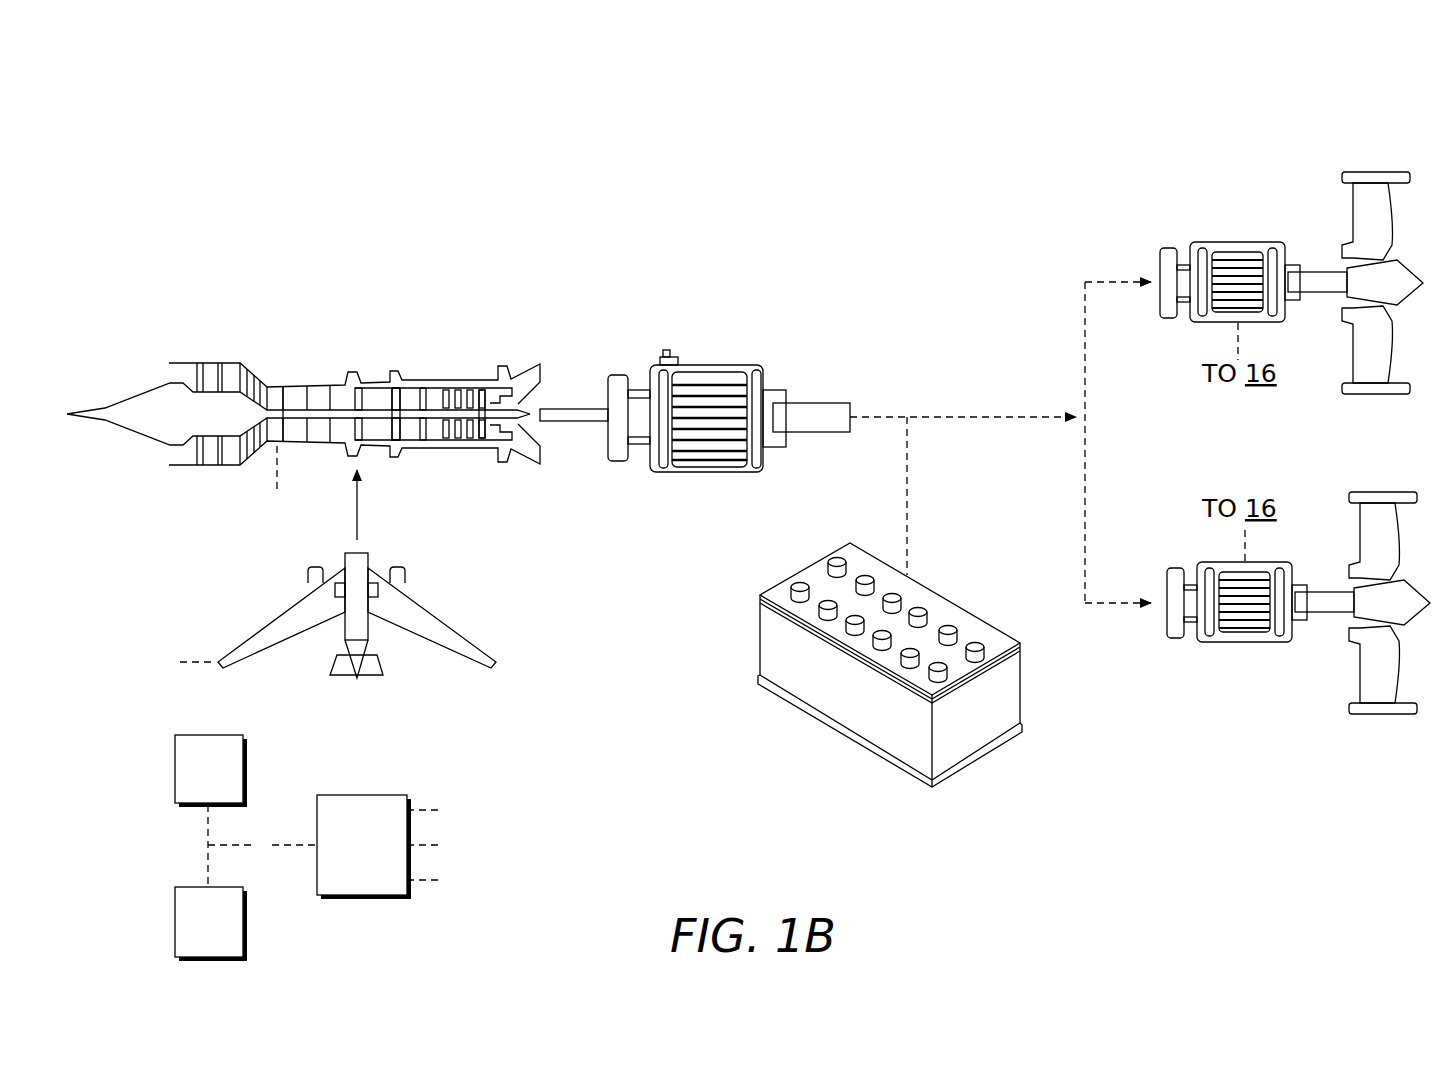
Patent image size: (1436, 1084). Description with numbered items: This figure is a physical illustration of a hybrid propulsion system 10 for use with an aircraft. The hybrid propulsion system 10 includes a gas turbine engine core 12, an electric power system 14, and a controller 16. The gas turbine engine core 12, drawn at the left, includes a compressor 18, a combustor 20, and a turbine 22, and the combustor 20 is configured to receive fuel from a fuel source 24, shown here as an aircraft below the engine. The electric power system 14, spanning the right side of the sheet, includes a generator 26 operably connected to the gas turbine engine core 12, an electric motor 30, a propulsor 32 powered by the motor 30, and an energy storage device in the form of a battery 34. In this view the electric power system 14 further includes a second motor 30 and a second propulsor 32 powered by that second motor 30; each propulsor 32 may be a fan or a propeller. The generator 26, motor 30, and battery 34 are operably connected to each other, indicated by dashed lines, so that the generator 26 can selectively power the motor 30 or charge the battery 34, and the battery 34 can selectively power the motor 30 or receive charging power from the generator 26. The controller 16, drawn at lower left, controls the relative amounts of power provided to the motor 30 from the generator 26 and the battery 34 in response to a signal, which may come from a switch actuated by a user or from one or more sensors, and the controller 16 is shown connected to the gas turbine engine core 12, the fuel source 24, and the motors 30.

The hybrid propulsion system 10 is at (173, 208).
The gas turbine engine core 12 is at (303, 409).
The electric power system 14 is at (1367, 113).
The controller 16 is at (345, 898).
The compressor 18 is at (296, 360).
The combustor 20 is at (386, 360).
The turbine 22 is at (494, 360).
The fuel source 24 is at (272, 612).
The generator 26 is at (738, 474).
The electric motor 30 is at (1236, 228).
The propulsor 32 is at (1400, 342).
The battery 34 is at (826, 735).